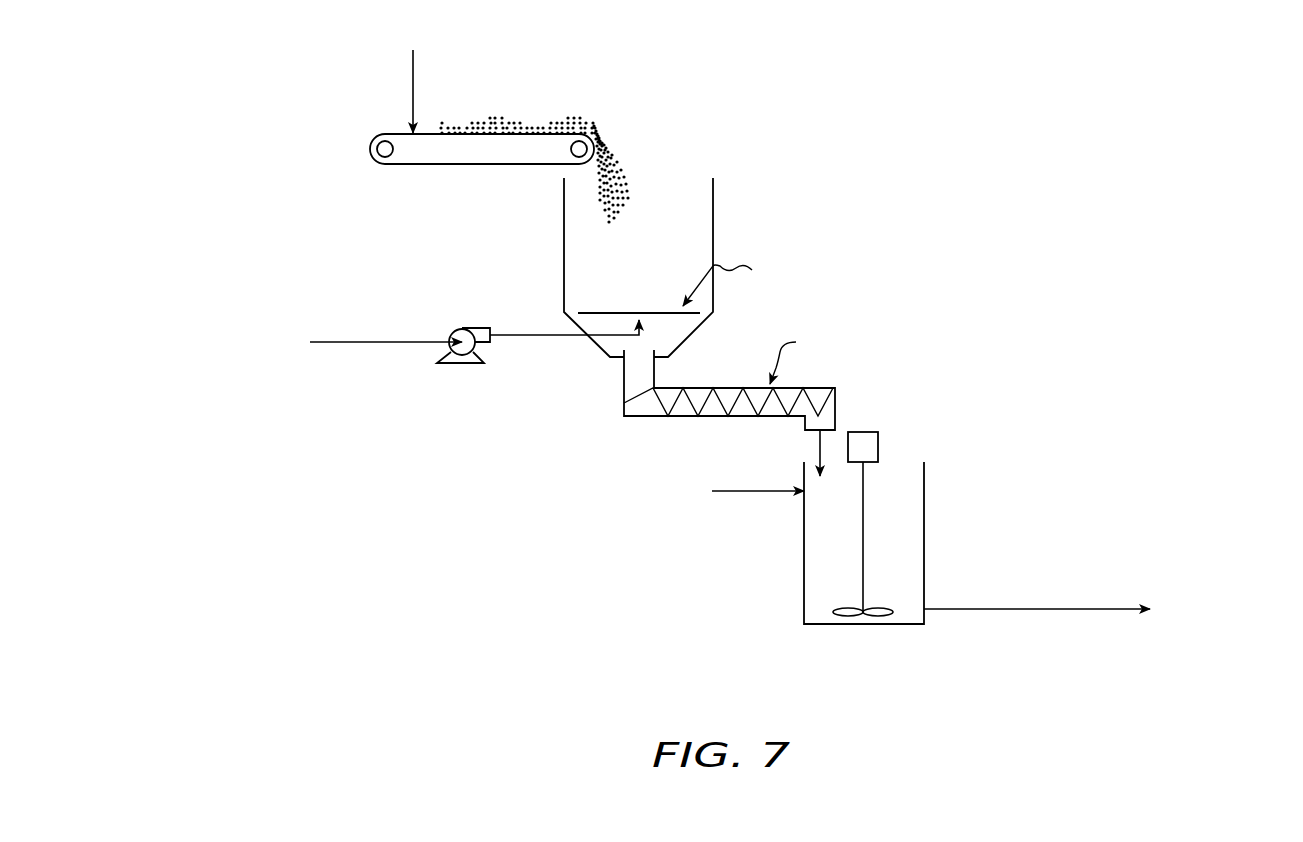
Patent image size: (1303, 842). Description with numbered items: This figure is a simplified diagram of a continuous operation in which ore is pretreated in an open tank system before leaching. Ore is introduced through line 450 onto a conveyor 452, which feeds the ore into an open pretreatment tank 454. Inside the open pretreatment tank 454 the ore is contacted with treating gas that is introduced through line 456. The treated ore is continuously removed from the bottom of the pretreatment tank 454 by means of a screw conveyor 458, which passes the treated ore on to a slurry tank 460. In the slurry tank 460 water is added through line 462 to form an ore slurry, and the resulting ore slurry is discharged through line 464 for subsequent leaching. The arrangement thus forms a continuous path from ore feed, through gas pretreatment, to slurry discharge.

The line 450 is at (413, 82).
The conveyor 452 is at (438, 165).
The open pretreatment tank 454 is at (713, 208).
The line 456 is at (380, 342).
The screw conveyor 458 is at (648, 417).
The slurry tank 460 is at (924, 497).
The line 462 is at (748, 492).
The line 464 is at (1032, 610).